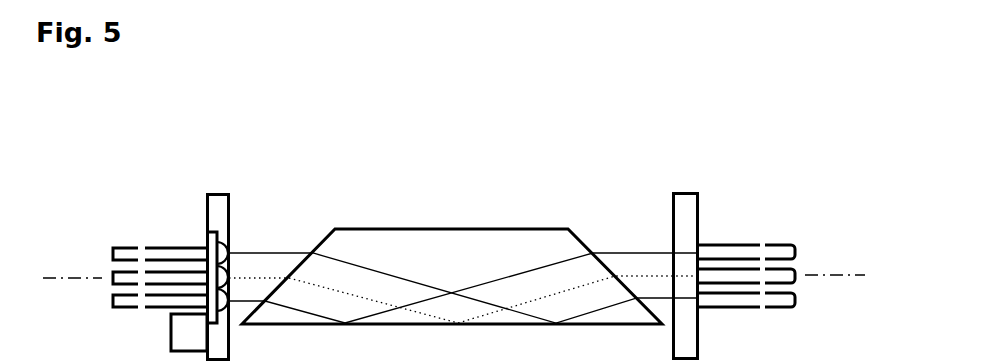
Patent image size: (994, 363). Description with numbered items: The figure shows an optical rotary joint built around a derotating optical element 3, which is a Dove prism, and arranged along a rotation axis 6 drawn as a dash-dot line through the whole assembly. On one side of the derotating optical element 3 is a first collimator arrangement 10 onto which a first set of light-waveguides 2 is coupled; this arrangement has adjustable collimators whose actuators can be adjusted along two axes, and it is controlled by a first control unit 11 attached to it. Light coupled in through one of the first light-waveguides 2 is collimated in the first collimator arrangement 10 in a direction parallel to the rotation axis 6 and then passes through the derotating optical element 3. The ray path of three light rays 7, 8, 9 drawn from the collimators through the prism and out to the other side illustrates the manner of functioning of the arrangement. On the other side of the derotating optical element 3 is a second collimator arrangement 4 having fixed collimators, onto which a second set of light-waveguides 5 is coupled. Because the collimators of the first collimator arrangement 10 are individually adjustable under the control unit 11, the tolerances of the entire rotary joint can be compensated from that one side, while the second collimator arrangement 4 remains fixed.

The first set of light-waveguides 2 is at (113, 247).
The derotating optical element 3 is at (545, 217).
The second collimator arrangement 4 is at (680, 180).
The second set of light-waveguides 5 is at (743, 228).
The rotation axis 6 is at (88, 288).
The light ray 7 is at (237, 247).
The light ray 8 is at (248, 273).
The light ray 9 is at (257, 293).
The first collimator arrangement 10 is at (212, 190).
The control unit 11 is at (189, 332).